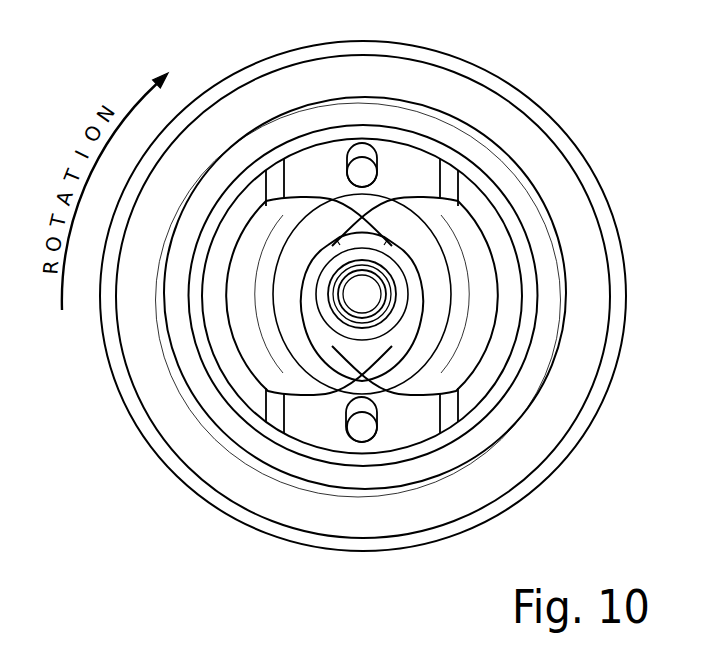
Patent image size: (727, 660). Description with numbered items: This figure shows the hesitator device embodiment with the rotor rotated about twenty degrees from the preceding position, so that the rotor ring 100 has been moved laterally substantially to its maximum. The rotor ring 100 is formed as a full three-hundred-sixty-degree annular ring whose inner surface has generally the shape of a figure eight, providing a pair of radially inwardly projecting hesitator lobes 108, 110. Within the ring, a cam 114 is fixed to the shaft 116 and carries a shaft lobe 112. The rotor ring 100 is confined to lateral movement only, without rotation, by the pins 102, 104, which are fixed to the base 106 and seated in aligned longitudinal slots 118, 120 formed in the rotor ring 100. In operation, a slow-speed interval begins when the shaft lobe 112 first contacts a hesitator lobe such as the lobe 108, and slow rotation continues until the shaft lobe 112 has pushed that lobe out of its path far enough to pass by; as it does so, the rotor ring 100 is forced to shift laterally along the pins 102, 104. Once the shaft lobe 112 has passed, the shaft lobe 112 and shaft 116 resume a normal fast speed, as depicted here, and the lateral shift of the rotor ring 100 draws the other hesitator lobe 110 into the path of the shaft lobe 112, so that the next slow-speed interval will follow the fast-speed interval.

The rotor ring 100 is at (402, 177).
The pin 102 is at (362, 172).
The pin 104 is at (362, 428).
The base 106 is at (245, 320).
The hesitator lobe 108 is at (364, 203).
The hesitator lobe 110 is at (365, 389).
The shaft lobe 112 is at (335, 205).
The cam 114 is at (325, 335).
The shaft 116 is at (362, 296).
The longitudinal slot 118 is at (357, 150).
The longitudinal slot 120 is at (376, 413).